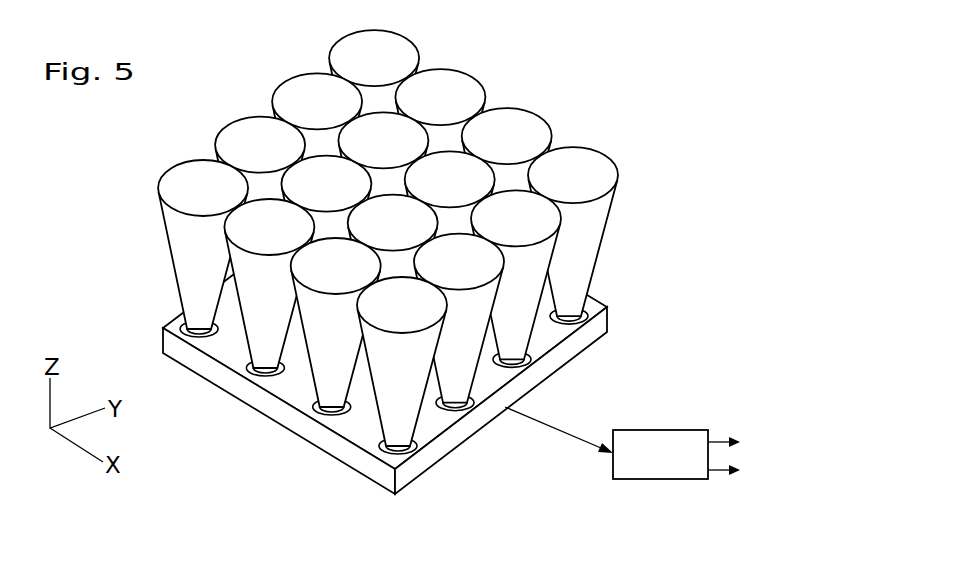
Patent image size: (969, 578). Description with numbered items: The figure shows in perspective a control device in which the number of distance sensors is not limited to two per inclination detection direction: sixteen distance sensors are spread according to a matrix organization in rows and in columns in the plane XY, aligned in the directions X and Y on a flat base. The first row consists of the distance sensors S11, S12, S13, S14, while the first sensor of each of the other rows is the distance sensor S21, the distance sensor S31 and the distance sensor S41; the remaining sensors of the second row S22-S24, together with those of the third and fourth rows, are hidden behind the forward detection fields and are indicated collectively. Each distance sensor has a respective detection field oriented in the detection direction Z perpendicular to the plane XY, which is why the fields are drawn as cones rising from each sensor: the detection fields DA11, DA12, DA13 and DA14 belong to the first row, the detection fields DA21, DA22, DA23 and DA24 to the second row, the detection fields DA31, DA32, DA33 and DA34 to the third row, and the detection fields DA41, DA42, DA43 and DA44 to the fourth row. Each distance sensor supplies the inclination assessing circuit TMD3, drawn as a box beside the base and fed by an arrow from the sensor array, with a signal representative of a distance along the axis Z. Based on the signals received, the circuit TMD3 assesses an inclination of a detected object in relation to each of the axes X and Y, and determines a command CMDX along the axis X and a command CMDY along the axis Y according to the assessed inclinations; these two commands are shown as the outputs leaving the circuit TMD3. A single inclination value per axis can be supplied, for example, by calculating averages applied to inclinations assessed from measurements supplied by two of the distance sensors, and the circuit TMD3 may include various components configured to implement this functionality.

The detection field DA11 is at (393, 413).
The detection field DA12 is at (327, 357).
The detection field DA13 is at (261, 320).
The detection field DA14 is at (182, 246).
The detection field DA21 is at (462, 372).
The detection field DA22 is at (361, 234).
The detection field DA23 is at (358, 196).
The detection field DA24 is at (230, 137).
The detection field DA31 is at (520, 323).
The detection field DA32 is at (418, 192).
The detection field DA33 is at (415, 152).
The detection field DA34 is at (297, 98).
The detection field DA41 is at (582, 265).
The detection field DA42 is at (530, 122).
The detection field DA43 is at (463, 78).
The detection field DA44 is at (403, 52).
The distance sensor S11 is at (410, 448).
The distance sensor S12 is at (335, 413).
The distance sensor S13 is at (262, 376).
The distance sensor S14 is at (180, 324).
The distance sensor S21 is at (453, 410).
The distance sensor S31 is at (535, 362).
The distance sensor S41 is at (590, 316).
The distance sensors S22-S24 is at (615, 242).
The inclination assessing circuit TMD3 is at (695, 470).
The command along the axis X CMDX is at (761, 445).
The command along the axis Y CMDY is at (762, 470).